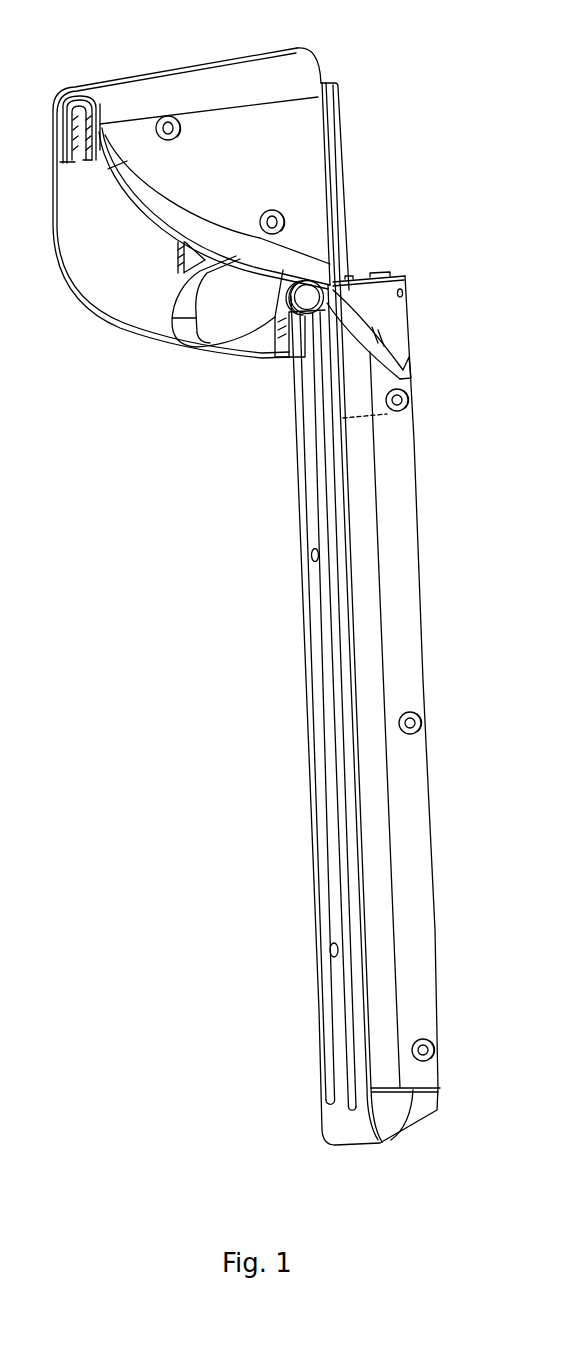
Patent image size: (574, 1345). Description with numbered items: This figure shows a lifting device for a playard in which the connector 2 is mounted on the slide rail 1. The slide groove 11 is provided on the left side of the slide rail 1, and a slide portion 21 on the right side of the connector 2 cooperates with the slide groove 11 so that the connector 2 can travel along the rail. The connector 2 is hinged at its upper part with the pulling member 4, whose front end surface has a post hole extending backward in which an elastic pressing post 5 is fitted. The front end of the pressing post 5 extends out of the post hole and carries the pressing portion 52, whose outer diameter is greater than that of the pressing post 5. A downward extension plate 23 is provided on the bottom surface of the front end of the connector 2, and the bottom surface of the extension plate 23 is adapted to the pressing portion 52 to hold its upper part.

The slide rail 1 is at (418, 787).
The slide groove 11 is at (332, 593).
The connector 2 is at (233, 130).
The slide portion 21 is at (335, 157).
The extension plate 23 is at (287, 279).
The pulling member 4 is at (212, 318).
The pressing post 5 is at (285, 312).
The pressing portion 52 is at (307, 300).